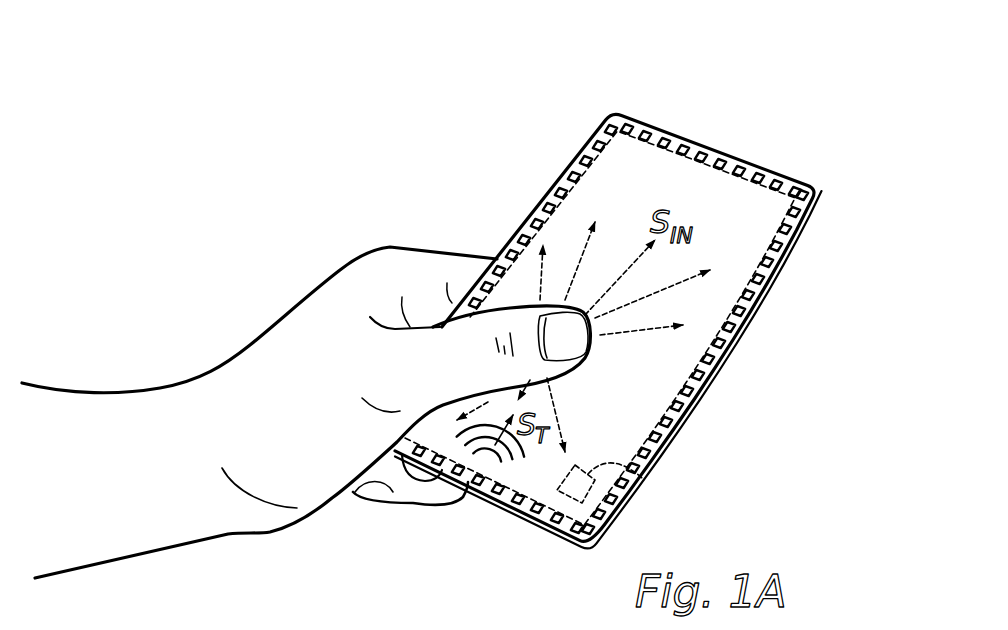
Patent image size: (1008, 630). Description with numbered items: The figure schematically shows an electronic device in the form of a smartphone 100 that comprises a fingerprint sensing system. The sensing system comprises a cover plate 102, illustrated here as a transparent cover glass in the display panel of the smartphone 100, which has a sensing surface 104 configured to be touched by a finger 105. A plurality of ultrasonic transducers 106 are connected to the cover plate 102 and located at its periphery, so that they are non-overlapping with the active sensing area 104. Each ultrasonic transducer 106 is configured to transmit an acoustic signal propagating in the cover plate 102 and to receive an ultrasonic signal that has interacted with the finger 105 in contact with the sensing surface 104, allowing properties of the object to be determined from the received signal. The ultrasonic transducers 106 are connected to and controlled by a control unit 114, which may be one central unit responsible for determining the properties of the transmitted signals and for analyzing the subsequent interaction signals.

The smartphone 100 is at (783, 74).
The cover plate 102 is at (819, 196).
The sensing surface 104 is at (600, 187).
The finger 105 is at (460, 343).
The ultrasonic transducers 106 is at (463, 497).
The control unit 114 is at (641, 473).